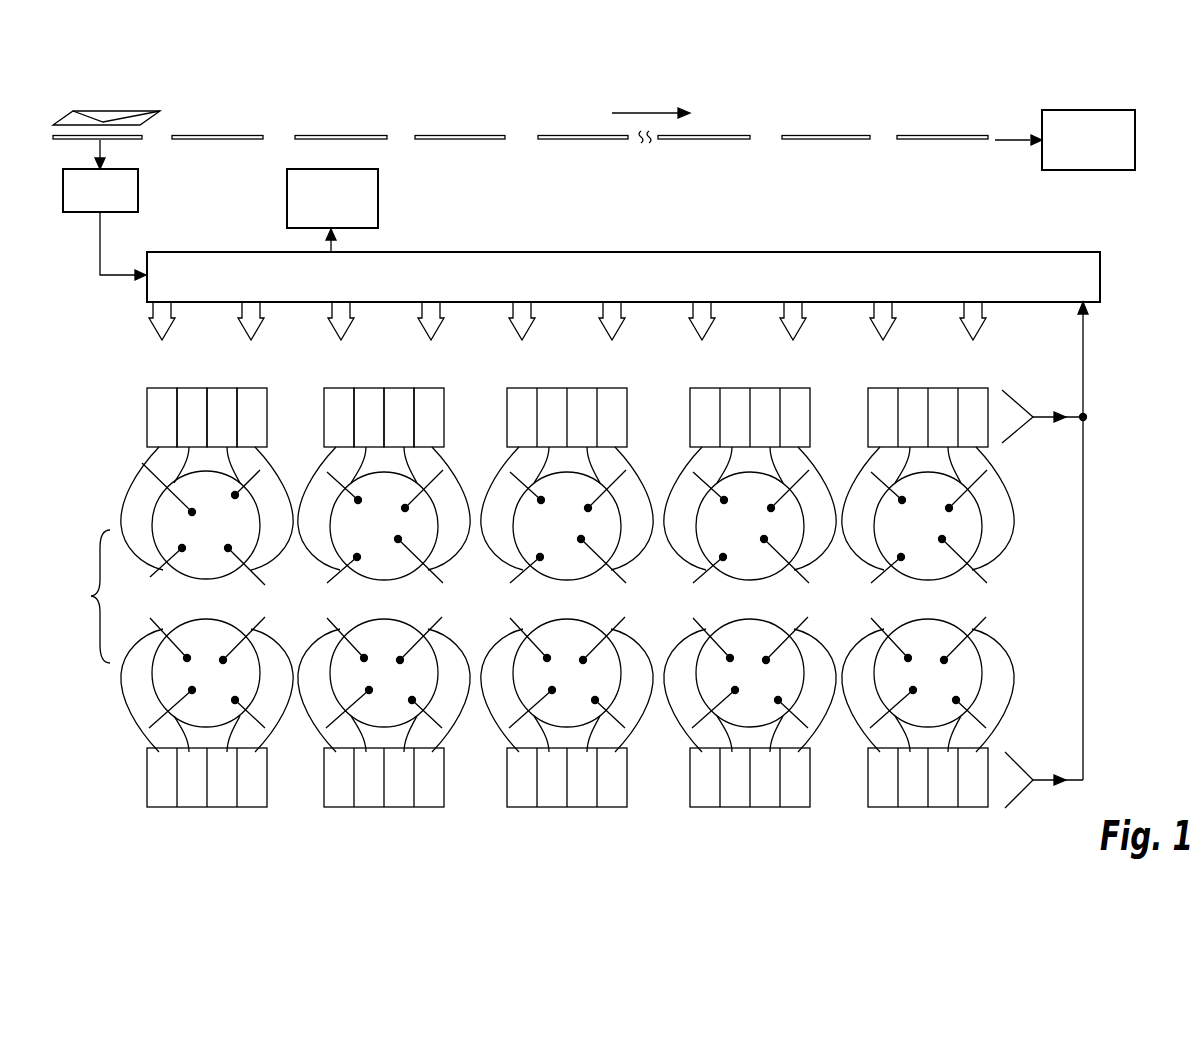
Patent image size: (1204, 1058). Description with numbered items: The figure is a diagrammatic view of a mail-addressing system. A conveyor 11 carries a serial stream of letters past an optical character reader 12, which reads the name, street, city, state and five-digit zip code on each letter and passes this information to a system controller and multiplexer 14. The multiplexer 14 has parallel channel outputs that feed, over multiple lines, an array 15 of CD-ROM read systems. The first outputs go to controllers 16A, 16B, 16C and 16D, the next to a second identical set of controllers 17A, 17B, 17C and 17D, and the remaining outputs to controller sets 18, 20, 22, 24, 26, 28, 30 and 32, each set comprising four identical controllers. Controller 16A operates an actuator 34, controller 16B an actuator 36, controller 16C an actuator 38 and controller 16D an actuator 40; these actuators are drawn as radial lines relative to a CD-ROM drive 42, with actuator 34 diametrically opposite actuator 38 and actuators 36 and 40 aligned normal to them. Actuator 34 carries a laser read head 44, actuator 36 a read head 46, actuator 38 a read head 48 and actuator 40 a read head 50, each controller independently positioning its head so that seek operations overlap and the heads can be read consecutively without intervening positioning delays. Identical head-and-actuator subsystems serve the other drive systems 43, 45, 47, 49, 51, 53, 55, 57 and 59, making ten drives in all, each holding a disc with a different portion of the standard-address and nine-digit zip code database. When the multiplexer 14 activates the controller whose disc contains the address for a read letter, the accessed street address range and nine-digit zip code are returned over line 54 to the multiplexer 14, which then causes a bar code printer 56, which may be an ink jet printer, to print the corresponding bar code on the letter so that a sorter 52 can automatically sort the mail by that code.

The conveyor 11 is at (748, 122).
The optical character reader 12 is at (138, 194).
The system controller and multiplexer 14 is at (722, 252).
The array of CD-ROM read systems 15 is at (90, 595).
The controller 16A is at (160, 388).
The controller 16B is at (192, 388).
The controller 16C is at (224, 388).
The controller 16D is at (254, 388).
The controller 17A is at (338, 388).
The controller 17B is at (369, 388).
The controller 17C is at (401, 388).
The controller 17D is at (433, 388).
The controller set 18 is at (569, 388).
The controller set 20 is at (749, 388).
The controller set 22 is at (928, 388).
The controller set 24 is at (212, 808).
The controller set 26 is at (389, 808).
The controller set 28 is at (578, 808).
The controller set 30 is at (762, 808).
The controller set 32 is at (942, 808).
The actuator 34 is at (161, 580).
The actuator 36 is at (163, 490).
The actuator 38 is at (245, 482).
The actuator 40 is at (249, 585).
The CD-ROM drive 42 is at (207, 580).
The drive system 43 is at (385, 580).
The read head 44 is at (180, 547).
The drive system 45 is at (565, 580).
The read head 46 is at (197, 509).
The drive system 47 is at (748, 580).
The read head 48 is at (237, 498).
The drive system 49 is at (927, 580).
The read head 50 is at (226, 548).
The drive system 51 is at (256, 698).
The sorter 52 is at (1135, 143).
The drive system 53 is at (431, 575).
The line 54 is at (1083, 386).
The outer guide 55 is at (611, 575).
The bar code printer 56 is at (378, 203).
The drive system 57 is at (794, 575).
The drive system 59 is at (972, 575).